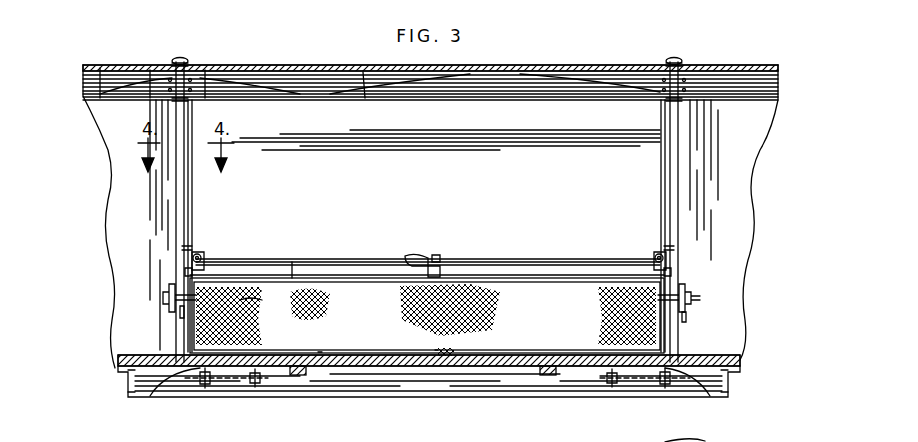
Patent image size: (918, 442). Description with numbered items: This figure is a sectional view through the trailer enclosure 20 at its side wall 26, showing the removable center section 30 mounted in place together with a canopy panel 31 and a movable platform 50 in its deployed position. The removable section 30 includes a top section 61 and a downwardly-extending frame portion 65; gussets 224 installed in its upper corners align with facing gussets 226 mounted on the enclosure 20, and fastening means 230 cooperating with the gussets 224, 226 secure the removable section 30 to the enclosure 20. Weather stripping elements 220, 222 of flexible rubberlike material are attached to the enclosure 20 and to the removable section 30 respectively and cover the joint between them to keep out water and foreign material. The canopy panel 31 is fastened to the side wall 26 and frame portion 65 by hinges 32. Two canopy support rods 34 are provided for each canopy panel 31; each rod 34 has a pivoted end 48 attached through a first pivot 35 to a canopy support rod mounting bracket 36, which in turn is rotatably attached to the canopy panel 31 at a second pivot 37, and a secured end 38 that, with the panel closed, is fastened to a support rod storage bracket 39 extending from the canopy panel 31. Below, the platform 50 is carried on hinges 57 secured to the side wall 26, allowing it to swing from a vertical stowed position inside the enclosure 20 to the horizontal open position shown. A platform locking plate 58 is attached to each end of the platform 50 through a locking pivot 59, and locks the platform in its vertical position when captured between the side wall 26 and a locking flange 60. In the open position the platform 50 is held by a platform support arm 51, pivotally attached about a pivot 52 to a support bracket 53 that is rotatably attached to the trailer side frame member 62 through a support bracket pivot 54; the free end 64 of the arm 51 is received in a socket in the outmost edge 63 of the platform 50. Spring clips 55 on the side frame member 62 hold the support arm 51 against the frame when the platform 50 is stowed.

The enclosure 20 is at (104, 172).
The side wall 26 is at (737, 152).
The removable center section 30 is at (577, 64).
The canopy panel 31 is at (205, 228).
The hinge 32 is at (215, 98).
The canopy support rod 34 is at (351, 262).
The first pivot 35 is at (185, 272).
The canopy support rod mounting bracket 36 is at (204, 254).
The second pivot 37 is at (182, 248).
The secured end 38 is at (441, 262).
The support rod storage bracket 39 is at (418, 262).
The pivoted end 48 is at (203, 256).
The movable platform 50 is at (365, 358).
The platform support arm 51 is at (247, 384).
The pivot 52 is at (194, 390).
The support bracket 53 is at (210, 388).
The support bracket pivot 54 is at (205, 374).
The spring clip 55 is at (262, 390).
The hinge 57 is at (320, 350).
The platform locking plate 58 is at (182, 318).
The locking pivot 59 is at (200, 340).
The locking flange 60 is at (172, 302).
The top section 61 is at (745, 441).
The trailer side frame member 62 is at (425, 382).
The outmost edge 63 is at (292, 262).
The free end 64 is at (296, 378).
The frame portion 65 is at (363, 72).
The weather stripping element 220 is at (178, 62).
The weather stripping element 222 is at (185, 58).
The gusset 224 is at (205, 70).
The facing gusset 226 is at (100, 68).
The fastening means 230 is at (150, 70).